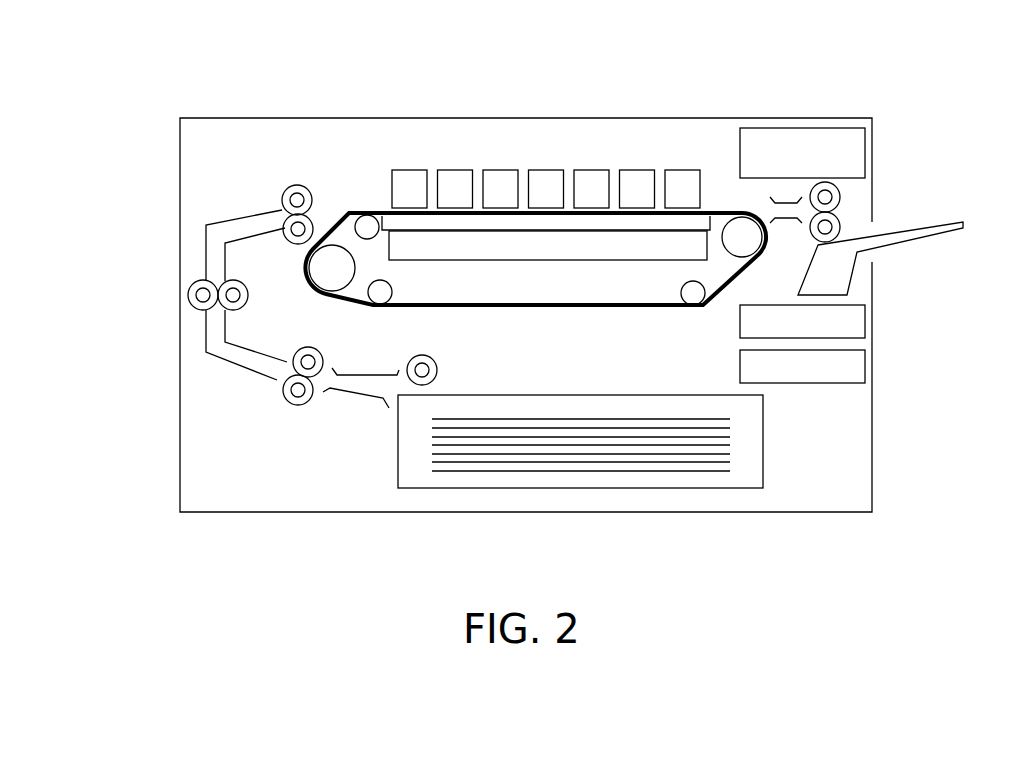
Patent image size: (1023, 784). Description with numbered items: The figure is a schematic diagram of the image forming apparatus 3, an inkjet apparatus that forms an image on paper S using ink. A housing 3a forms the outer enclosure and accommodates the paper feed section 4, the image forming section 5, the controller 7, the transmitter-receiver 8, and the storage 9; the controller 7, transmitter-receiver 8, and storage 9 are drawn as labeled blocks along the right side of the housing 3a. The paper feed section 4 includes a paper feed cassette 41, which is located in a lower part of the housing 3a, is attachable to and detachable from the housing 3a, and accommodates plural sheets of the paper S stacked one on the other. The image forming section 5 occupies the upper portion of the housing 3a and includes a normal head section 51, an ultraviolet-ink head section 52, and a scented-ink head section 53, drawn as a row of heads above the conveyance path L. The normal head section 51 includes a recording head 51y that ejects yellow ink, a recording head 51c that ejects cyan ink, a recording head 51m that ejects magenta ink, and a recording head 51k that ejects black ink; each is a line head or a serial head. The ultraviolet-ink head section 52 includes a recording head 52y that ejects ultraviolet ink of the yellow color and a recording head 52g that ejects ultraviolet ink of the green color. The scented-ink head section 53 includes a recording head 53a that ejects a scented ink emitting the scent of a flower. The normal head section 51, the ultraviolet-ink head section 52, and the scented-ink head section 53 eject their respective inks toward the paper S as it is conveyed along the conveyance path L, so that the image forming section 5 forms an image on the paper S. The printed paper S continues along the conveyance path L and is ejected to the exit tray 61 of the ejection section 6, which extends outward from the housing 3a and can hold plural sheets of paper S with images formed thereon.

The image forming apparatus 3 is at (562, 262).
The housing 3a is at (872, 483).
The paper feed section 4 is at (600, 478).
The paper feed cassette 41 is at (650, 489).
The paper S is at (510, 471).
The image forming section 5 is at (327, 168).
The normal head section 51 is at (449, 139).
The recording head 51y is at (403, 182).
The recording head 51c is at (445, 182).
The recording head 51m is at (490, 182).
The recording head 51k is at (535, 182).
The ultraviolet-ink head section 52 is at (608, 132).
The recording head 52y is at (578, 182).
The recording head 52g is at (627, 182).
The scented-ink head section 53 is at (693, 168).
The recording head 53a is at (680, 178).
The ejection section 6 is at (890, 220).
The exit tray 61 is at (918, 218).
The controller 7 is at (865, 318).
The transmitter-receiver 8 is at (865, 142).
The storage 9 is at (865, 363).
The conveyance path L is at (223, 383).